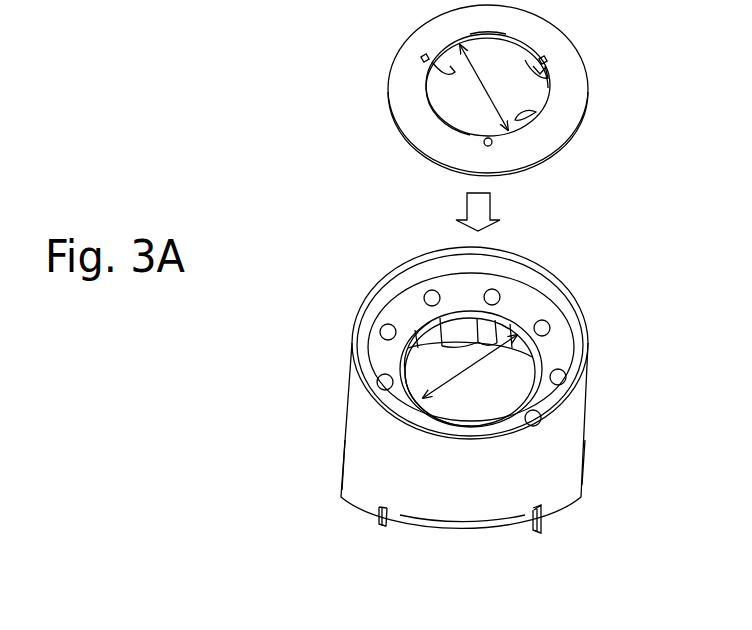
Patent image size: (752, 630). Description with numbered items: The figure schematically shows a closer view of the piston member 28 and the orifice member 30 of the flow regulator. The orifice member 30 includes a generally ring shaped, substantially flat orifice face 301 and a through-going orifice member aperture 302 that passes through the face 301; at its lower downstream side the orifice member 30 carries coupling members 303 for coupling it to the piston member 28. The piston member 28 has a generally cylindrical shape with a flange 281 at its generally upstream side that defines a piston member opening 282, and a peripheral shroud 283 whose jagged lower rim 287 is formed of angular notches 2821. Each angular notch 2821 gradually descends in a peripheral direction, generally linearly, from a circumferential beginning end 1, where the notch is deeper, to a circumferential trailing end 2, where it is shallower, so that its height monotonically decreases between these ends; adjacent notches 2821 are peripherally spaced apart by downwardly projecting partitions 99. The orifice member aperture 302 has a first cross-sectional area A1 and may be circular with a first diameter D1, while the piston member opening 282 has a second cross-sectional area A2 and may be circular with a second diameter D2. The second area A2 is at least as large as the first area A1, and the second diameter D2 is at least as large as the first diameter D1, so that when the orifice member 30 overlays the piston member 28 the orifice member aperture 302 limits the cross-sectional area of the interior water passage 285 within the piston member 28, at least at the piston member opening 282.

The orifice member 30 is at (378, 93).
The orifice face 301 is at (505, 31).
The orifice member aperture 302 is at (520, 113).
The coupling members 303 is at (533, 55).
The first diameter D1 is at (465, 68).
The first cross-sectional area A1 is at (445, 103).
The piston member 28 is at (328, 380).
The flange 281 is at (563, 347).
The piston member opening 282 is at (515, 402).
The peripheral shroud 283 is at (496, 483).
The interior water passage 285 is at (460, 400).
The angular notches 2821 is at (500, 555).
The partitions 99 is at (380, 522).
The lower rim 287 is at (502, 575).
The circumferential beginning end 1 is at (365, 513).
The circumferential trailing end 2 is at (399, 532).
The second diameter D2 is at (460, 365).
The second cross-sectional area A2 is at (422, 365).